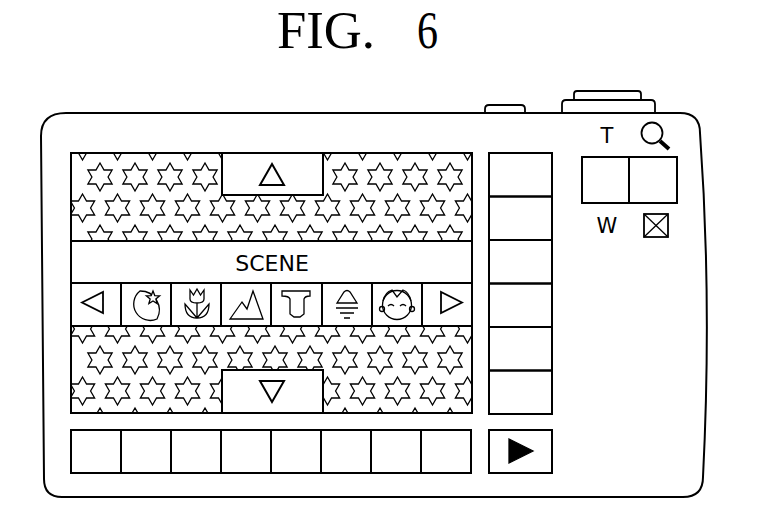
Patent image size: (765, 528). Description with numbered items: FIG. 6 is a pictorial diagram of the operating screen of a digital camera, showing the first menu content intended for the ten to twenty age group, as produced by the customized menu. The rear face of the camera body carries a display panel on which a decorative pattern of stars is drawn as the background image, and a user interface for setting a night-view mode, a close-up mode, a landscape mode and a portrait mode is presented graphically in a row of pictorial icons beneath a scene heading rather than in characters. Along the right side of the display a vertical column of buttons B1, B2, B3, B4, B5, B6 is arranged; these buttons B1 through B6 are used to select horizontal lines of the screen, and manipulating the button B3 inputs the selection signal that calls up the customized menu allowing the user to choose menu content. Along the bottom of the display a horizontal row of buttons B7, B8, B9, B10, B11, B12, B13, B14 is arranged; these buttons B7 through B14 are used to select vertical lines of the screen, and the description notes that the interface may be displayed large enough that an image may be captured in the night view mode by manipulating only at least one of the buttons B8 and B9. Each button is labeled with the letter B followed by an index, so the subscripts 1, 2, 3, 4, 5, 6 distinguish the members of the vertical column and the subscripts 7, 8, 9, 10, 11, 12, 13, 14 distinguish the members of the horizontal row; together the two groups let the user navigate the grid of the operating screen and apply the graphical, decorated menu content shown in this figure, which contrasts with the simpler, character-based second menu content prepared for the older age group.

The button B1 is at (520, 175).
The button B2 is at (520, 219).
The button B3 is at (520, 262).
The button B4 is at (520, 306).
The button B5 is at (520, 349).
The button B6 is at (520, 393).
The button B7 is at (96, 451).
The button B8 is at (146, 451).
The button B9 is at (196, 451).
The button B10 is at (246, 451).
The button B11 is at (296, 451).
The button B12 is at (346, 451).
The button B13 is at (396, 451).
The button B14 is at (446, 451).
The button B1 1 is at (520, 175).
The button B2 2 is at (520, 219).
The button B3 3 is at (520, 262).
The button B4 4 is at (520, 306).
The button B5 5 is at (520, 349).
The button B6 6 is at (520, 393).
The button B7 7 is at (96, 451).
The button B8 8 is at (146, 451).
The button B9 9 is at (196, 451).
The button B10 10 is at (246, 451).
The button B11 11 is at (296, 451).
The button B12 12 is at (346, 451).
The button B13 13 is at (396, 451).
The button B14 14 is at (446, 451).